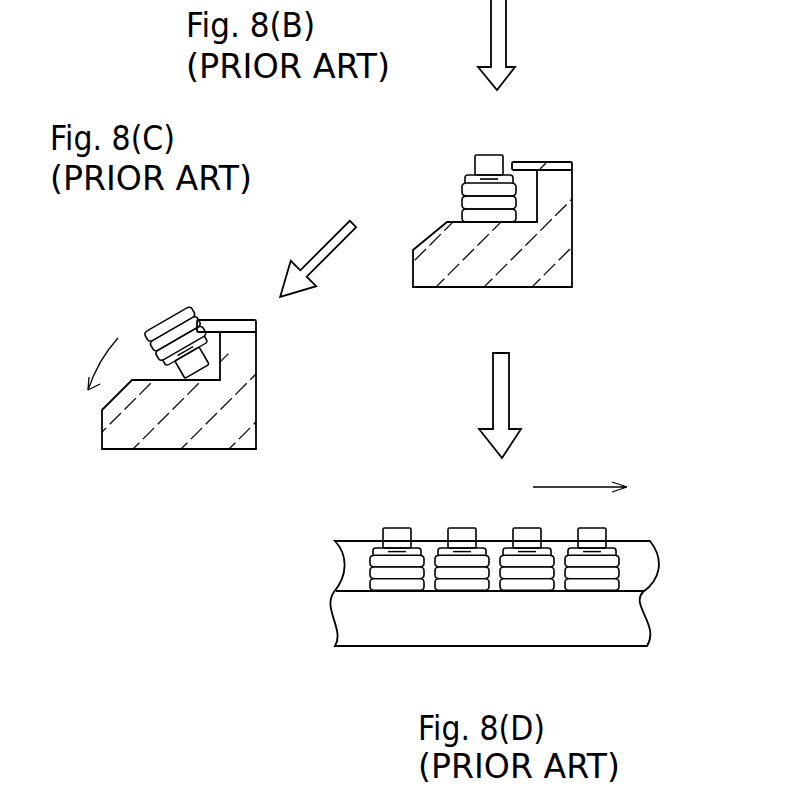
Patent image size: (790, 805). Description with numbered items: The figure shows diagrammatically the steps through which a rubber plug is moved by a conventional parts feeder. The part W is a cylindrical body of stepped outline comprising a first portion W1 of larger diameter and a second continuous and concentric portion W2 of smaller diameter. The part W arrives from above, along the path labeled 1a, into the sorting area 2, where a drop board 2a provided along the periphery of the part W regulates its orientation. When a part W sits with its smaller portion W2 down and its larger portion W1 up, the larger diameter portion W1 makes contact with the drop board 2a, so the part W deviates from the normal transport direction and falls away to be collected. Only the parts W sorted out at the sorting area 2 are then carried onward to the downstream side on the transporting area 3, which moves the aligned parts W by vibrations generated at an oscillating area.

In FIG. 8B, the feed chute 1a is at (420, 8).
In FIG. 8B, the sorting area 2 is at (557, 283).
In FIG. 8C, the sorting area 2 is at (229, 438).
In FIG. 8B, the drop board 2a is at (545, 167).
In FIG. 8C, the drop board 2a is at (226, 326).
In FIG. 8D, the transporting area 3 is at (355, 618).
In FIG. 8B, the part W is at (429, 153).
In FIG. 8C, the part W is at (125, 363).
In FIG. 8D, the part W is at (447, 516).
In FIG. 8B, the first portion W1 is at (463, 199).
In FIG. 8C, the first portion W1 is at (155, 317).
In FIG. 8B, the second portion W2 is at (489, 163).
In FIG. 8C, the second portion W2 is at (188, 372).